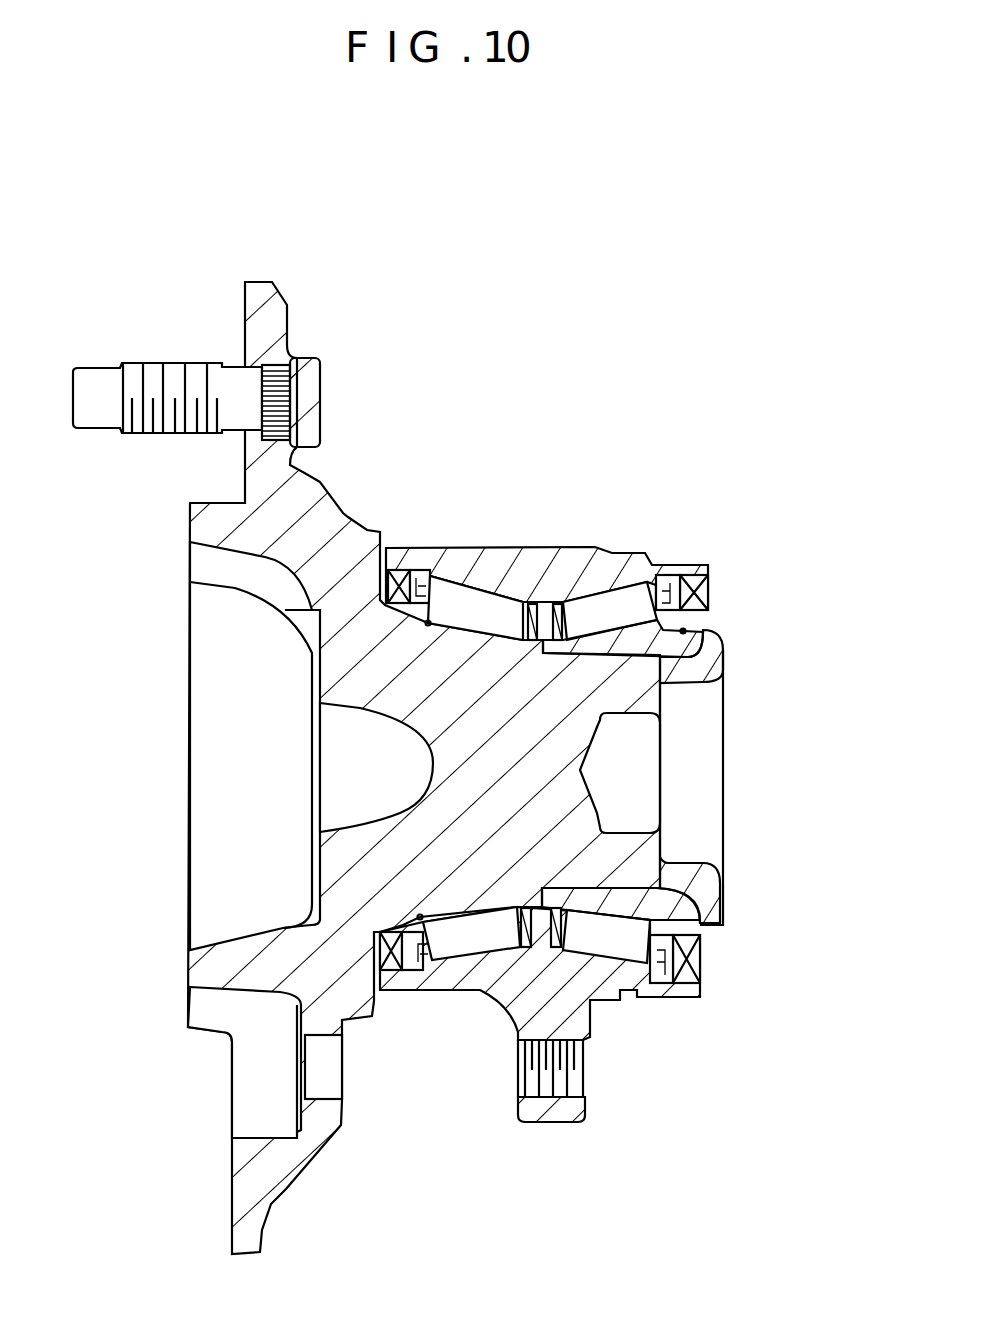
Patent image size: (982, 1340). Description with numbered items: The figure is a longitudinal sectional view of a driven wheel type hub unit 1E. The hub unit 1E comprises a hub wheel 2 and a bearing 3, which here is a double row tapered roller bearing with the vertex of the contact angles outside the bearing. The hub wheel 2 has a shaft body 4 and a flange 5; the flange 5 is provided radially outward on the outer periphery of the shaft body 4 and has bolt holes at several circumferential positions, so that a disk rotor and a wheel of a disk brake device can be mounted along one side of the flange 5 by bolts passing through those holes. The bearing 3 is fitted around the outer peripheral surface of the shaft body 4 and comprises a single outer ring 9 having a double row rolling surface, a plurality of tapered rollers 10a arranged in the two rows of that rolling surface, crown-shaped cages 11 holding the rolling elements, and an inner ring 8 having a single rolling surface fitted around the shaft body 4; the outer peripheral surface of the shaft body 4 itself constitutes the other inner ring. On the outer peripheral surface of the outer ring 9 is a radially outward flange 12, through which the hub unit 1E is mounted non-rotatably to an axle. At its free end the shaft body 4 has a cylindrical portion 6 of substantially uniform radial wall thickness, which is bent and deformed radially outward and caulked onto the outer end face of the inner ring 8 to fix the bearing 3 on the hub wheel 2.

The hub unit 1E is at (768, 407).
The hub wheel 2 is at (327, 867).
The bearing 3 is at (547, 547).
The shaft body 4 is at (460, 860).
The flange 5 is at (277, 294).
The cylindrical portion 6 is at (712, 648).
The inner ring 8 is at (683, 630).
The outer ring 9 is at (465, 582).
The tapered rollers 10a is at (449, 592).
The cages 11 is at (550, 945).
The flange 12 is at (553, 1117).